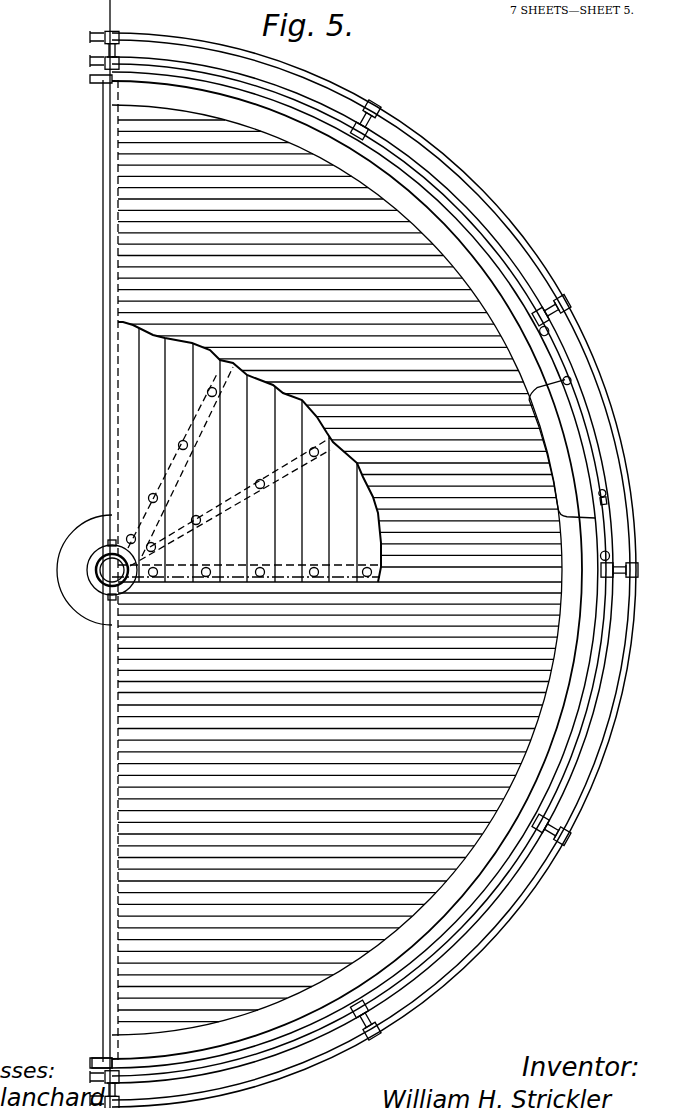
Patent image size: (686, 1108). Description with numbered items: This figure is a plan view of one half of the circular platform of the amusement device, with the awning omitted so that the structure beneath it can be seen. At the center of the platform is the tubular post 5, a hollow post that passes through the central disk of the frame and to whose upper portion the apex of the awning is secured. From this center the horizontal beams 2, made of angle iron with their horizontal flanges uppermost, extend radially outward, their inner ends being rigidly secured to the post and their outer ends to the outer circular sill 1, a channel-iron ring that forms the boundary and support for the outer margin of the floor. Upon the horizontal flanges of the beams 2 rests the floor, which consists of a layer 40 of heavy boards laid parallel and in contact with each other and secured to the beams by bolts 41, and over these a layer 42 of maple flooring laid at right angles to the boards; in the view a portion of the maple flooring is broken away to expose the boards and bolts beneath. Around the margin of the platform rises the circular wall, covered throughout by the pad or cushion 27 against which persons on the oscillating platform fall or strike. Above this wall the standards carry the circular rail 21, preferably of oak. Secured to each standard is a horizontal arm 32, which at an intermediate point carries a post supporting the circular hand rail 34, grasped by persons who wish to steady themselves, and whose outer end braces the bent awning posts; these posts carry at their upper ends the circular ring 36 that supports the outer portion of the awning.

The outer circular sill 1 is at (103, 1060).
The horizontal beams 2 is at (104, 262).
The tubular post 5 is at (95, 583).
The rail 21 is at (347, 570).
The pad or cushion 27 is at (355, 570).
The horizontal arm 32 is at (380, 113).
The circular hand rail 34 is at (362, 570).
The circular ring 36 is at (374, 570).
The layer of heavy boards 40 is at (145, 423).
The bolts 41 is at (213, 399).
The layer of maple flooring 42 is at (155, 280).